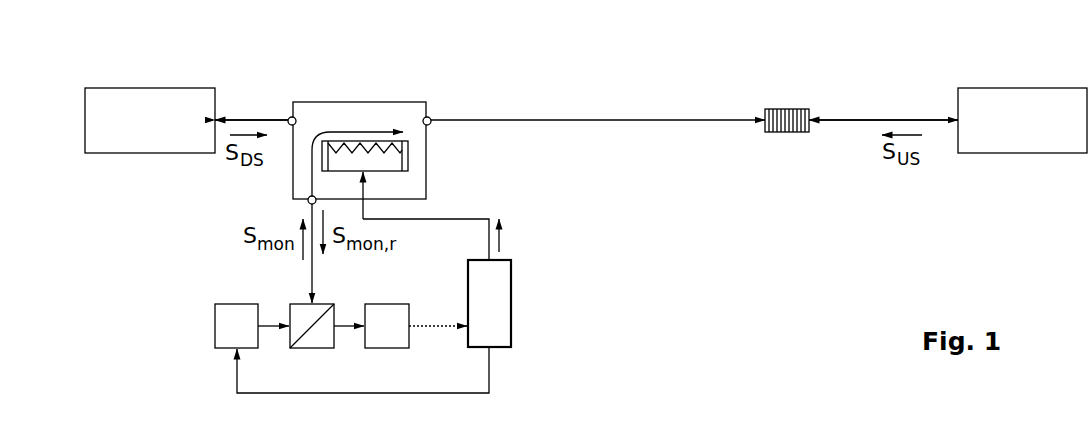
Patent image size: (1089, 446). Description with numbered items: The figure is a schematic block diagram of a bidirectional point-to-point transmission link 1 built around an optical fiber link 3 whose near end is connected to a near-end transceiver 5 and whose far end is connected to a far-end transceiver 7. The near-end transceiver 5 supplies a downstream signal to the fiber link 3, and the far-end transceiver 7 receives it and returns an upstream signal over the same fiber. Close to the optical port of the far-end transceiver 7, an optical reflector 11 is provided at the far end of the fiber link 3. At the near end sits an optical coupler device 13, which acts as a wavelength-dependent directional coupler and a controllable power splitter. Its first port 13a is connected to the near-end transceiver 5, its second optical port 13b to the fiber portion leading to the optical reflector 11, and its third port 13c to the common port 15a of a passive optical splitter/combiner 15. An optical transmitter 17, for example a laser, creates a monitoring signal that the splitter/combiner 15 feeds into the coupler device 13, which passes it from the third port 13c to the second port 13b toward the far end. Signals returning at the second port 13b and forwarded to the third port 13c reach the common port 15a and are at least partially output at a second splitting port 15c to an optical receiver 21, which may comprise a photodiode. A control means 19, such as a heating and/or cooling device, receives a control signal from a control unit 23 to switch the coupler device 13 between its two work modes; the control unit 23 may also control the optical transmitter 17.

The PtP transmission link 1 is at (668, 69).
The optical fiber link 3 is at (520, 119).
The near-end transceiver 5 is at (152, 92).
The far-end transceiver 7 is at (1023, 95).
The optical reflector 11 is at (789, 109).
The optical coupler device 13 is at (337, 112).
The first port 13a is at (290, 118).
The second optical port 13b is at (429, 119).
The third port 13c is at (308, 201).
The passive optical splitter/combiner 15 is at (292, 307).
The common port 15a is at (317, 303).
The second splitting port 15c is at (335, 330).
The optical transmitter 17 is at (215, 308).
The control means 19 is at (393, 161).
The optical receiver 21 is at (409, 335).
The control unit 23 is at (503, 287).